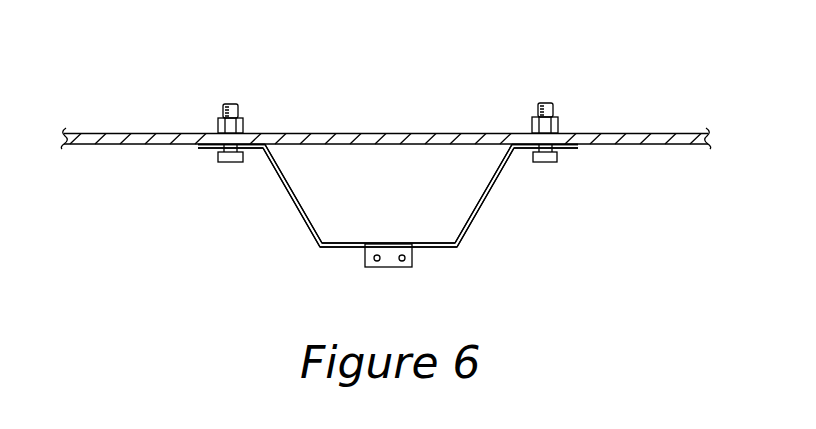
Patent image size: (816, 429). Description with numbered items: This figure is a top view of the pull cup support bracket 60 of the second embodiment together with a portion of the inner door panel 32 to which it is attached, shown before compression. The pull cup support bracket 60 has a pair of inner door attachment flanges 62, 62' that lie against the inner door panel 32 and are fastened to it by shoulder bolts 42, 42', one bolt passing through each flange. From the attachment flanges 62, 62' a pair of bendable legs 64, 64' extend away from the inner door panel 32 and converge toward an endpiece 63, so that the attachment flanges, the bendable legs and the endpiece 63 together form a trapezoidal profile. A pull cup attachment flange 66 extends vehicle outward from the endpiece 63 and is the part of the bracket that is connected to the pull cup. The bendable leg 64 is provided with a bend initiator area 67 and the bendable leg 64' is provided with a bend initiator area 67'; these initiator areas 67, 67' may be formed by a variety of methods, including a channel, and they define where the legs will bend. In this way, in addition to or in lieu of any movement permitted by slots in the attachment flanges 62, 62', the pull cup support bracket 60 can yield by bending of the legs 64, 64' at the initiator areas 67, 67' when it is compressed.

The inner door panel 32 is at (324, 133).
The shoulder bolt 42 is at (207, 189).
The shoulder bolt 42' is at (574, 184).
The pull cup support bracket 60 is at (320, 247).
The inner door attachment flange 62 is at (180, 154).
The inner door attachment flange 62' is at (598, 153).
The endpiece 63 is at (430, 248).
The bendable leg 64 is at (280, 196).
The bendable leg 64' is at (502, 196).
The pull cup attachment flange 66 is at (384, 267).
The bend initiator area 67 is at (274, 172).
The bend initiator area 67' is at (499, 173).